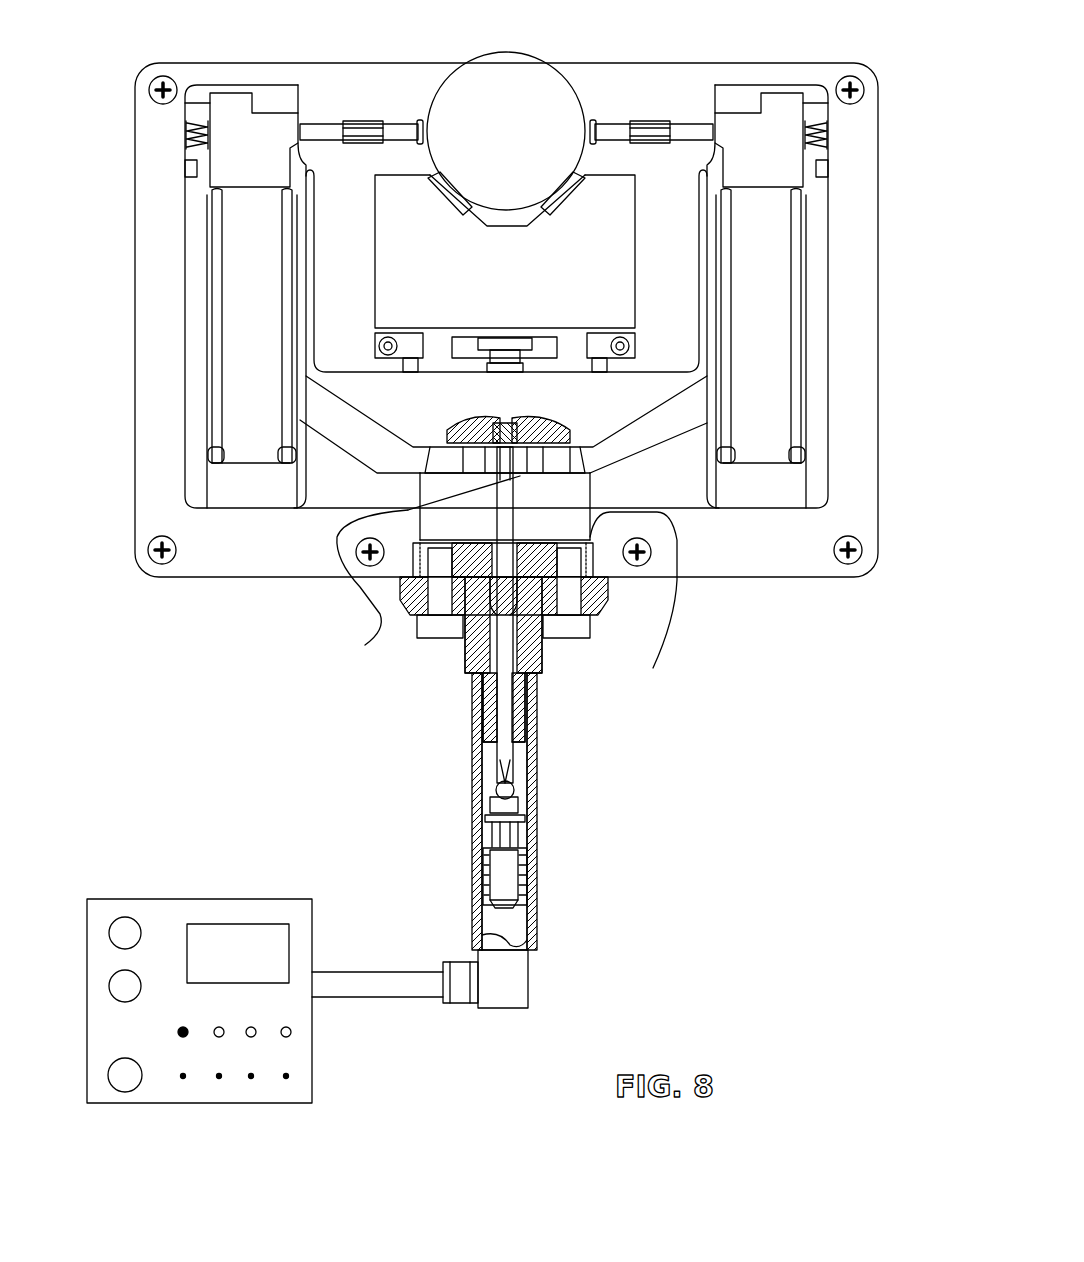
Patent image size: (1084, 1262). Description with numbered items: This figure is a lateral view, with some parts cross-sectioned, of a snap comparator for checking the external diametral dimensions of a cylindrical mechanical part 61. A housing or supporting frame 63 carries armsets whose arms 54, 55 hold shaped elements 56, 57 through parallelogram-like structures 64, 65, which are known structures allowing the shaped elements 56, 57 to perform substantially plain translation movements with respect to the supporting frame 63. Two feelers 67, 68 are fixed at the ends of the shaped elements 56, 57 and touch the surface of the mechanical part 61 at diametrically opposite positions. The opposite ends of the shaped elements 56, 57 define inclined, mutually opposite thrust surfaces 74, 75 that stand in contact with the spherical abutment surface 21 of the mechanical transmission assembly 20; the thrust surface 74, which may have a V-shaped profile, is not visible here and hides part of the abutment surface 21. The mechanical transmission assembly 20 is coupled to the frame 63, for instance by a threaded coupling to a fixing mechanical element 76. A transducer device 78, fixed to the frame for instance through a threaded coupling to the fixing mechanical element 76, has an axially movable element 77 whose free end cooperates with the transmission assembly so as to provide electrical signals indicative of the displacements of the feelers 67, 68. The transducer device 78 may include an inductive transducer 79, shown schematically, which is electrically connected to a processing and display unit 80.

The mechanical transmission assembly 20 is at (488, 765).
The abutment surface 21 is at (505, 420).
The arm 54 is at (202, 388).
The arm 55 is at (808, 413).
The shaped element 56 is at (273, 463).
The shaped element 57 is at (510, 484).
The mechanical part 61 is at (517, 110).
The supporting frame 63 is at (228, 523).
The parallelogram-like structure 64 is at (310, 415).
The parallelogram-like structure 65 is at (797, 440).
The feeler 67 is at (393, 128).
The feeler 68 is at (617, 133).
The thrust surface 74 is at (427, 569).
The thrust surface 75 is at (633, 583).
The fixing mechanical element 76 is at (462, 643).
The axially movable element 77 is at (530, 820).
The transducer device 78 is at (452, 903).
The inductive transducer 79 is at (532, 865).
The processing and display unit 80 is at (215, 910).